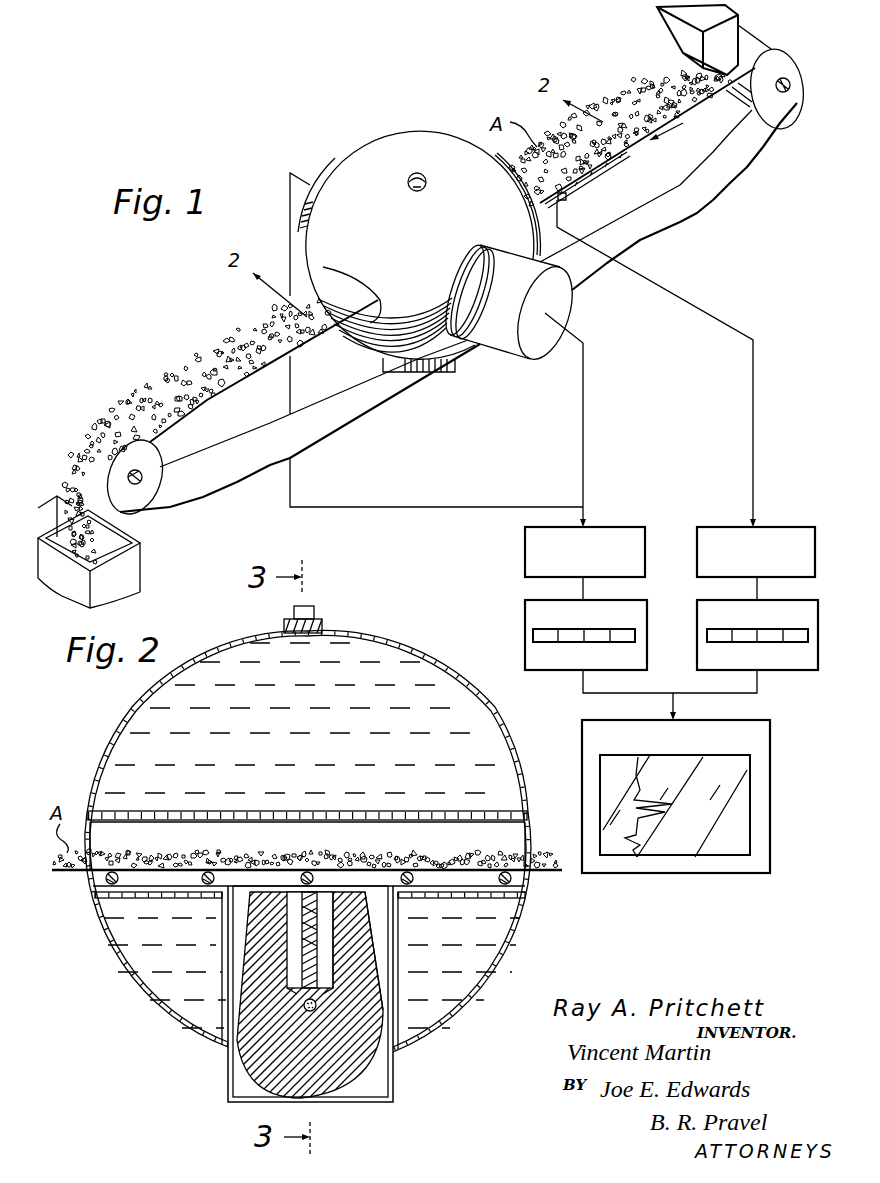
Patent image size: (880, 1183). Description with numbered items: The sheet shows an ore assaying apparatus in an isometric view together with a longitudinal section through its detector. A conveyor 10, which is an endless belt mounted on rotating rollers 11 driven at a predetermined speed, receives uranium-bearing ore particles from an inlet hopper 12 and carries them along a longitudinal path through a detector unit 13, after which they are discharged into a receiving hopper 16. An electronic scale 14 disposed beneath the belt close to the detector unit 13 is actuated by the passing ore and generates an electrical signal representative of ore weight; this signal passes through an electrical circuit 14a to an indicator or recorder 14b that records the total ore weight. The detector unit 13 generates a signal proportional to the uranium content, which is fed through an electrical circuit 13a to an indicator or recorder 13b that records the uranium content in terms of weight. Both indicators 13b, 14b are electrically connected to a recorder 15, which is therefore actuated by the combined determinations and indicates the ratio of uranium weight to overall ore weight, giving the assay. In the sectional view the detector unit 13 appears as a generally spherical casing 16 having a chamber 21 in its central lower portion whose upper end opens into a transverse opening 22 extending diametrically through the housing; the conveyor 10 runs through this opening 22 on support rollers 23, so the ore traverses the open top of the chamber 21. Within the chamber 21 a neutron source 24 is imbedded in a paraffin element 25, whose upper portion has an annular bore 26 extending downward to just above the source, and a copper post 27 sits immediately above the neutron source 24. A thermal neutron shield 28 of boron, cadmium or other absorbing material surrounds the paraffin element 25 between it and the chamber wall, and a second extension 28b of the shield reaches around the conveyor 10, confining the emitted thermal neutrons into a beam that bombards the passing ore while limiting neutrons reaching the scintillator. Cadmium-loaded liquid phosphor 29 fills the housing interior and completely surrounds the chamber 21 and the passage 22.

In FIG. 1, the conveyor 10 is at (215, 478).
In FIG. 2, the conveyor 10 is at (543, 843).
In FIG. 1, the rotating rollers 11 is at (150, 452).
In FIG. 1, the inlet hopper 12 is at (656, 20).
In FIG. 1, the detector unit 13 is at (385, 148).
In FIG. 1, the electrical circuit 13a is at (622, 527).
In FIG. 1, the indicator or recorder 13b is at (523, 630).
In FIG. 1, the electronic scale 14 is at (590, 177).
In FIG. 1, the electrical circuit 14a is at (800, 527).
In FIG. 1, the indicator or recorder 14b is at (787, 670).
In FIG. 1, the recorder 15 is at (707, 843).
In FIG. 1, the receiving hopper 16 is at (130, 567).
In FIG. 2, the receiving hopper 16 is at (348, 633).
In FIG. 2, the chamber 21 is at (402, 955).
In FIG. 2, the transverse opening 22 is at (523, 883).
In FIG. 2, the support rollers 23 is at (413, 853).
In FIG. 2, the neutron source 24 is at (305, 1003).
In FIG. 2, the paraffin element 25 is at (263, 1073).
In FIG. 2, the annular bore 26 is at (330, 918).
In FIG. 2, the copper post 27 is at (312, 970).
In FIG. 2, the thermal neutron shield 28 is at (395, 1095).
In FIG. 2, the second extension 28b is at (155, 880).
In FIG. 2, the liquid phosphor 29 is at (112, 743).